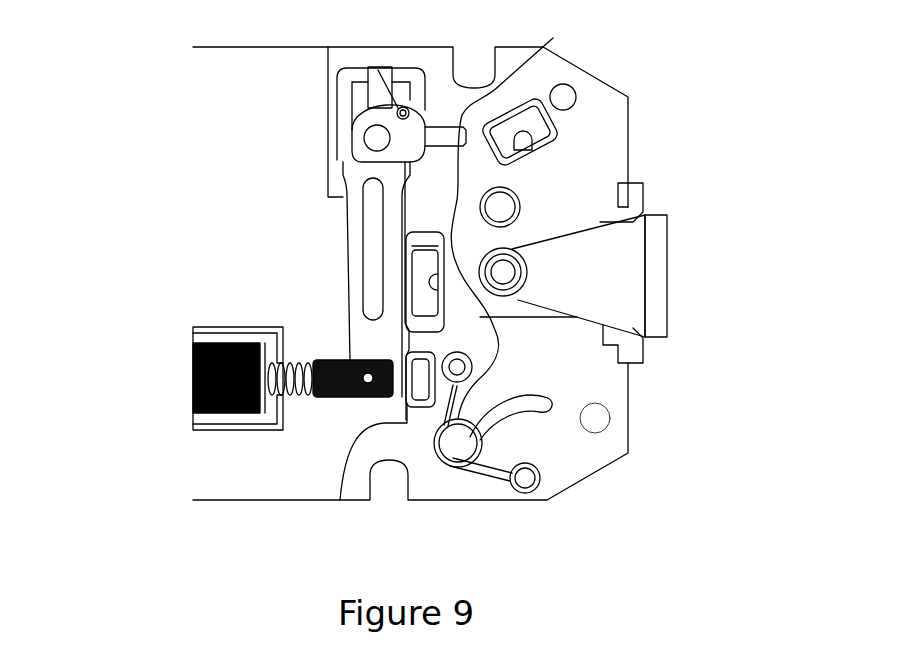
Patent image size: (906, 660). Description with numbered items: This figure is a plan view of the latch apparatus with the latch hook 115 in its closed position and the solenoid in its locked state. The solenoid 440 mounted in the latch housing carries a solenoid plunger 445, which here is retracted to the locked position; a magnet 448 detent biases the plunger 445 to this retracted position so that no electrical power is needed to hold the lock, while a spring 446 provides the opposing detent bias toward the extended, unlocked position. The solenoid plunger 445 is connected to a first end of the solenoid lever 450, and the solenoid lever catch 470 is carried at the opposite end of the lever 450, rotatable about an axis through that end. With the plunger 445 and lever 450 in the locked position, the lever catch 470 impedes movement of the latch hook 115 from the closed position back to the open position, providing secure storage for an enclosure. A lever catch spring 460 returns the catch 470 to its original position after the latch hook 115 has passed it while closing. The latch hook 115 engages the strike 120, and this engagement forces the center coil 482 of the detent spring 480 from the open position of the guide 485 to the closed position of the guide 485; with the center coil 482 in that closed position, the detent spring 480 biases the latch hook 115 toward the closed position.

The latch hook 115 is at (583, 202).
The strike 120 is at (668, 272).
The solenoid 440 is at (197, 380).
The solenoid plunger 445 is at (345, 392).
The spring 446 is at (322, 377).
The magnet 448 is at (257, 413).
The solenoid lever 450 is at (347, 73).
The lever catch spring 460 is at (425, 72).
The solenoid lever catch 470 is at (516, 75).
The detent spring 480 is at (540, 473).
The center coil 482 is at (462, 430).
The guide 485 is at (553, 415).